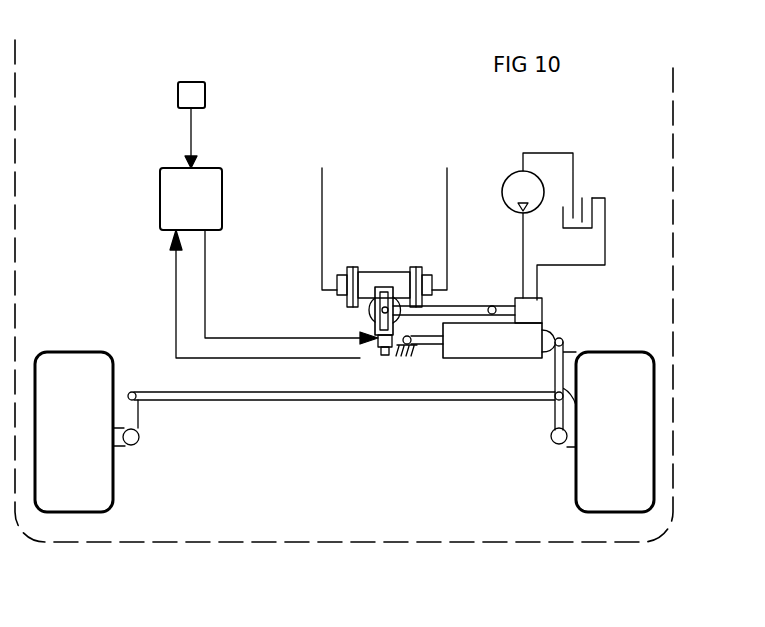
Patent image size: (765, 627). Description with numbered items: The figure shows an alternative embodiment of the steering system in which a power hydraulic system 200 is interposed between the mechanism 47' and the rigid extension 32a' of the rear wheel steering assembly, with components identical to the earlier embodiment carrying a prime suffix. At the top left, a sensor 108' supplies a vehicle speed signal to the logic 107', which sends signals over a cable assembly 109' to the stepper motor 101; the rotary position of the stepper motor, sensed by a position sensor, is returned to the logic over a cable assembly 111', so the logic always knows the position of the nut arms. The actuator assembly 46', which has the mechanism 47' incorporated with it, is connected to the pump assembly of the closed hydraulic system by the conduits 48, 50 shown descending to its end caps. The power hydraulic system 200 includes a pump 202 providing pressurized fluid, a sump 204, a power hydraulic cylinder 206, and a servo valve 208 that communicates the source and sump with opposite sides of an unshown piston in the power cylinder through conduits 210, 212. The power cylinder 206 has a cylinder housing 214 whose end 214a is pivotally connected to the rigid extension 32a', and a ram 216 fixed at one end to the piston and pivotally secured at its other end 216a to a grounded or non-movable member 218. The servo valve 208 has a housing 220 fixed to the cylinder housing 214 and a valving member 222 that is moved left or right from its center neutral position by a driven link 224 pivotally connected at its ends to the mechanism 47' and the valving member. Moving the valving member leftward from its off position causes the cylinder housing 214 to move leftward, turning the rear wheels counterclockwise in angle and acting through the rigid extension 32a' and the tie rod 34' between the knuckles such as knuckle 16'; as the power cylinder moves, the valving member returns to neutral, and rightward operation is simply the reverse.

The sensor 108' is at (163, 120).
The logic 107' is at (149, 199).
The cable assembly 111' is at (237, 294).
The cable assembly 109' is at (291, 287).
The conduit 48 is at (322, 190).
The conduit 50 is at (447, 182).
The actuator assembly 46' is at (384, 257).
The mechanism 47' is at (335, 311).
The stepper motor 101 is at (378, 345).
The grounded member 218 is at (392, 352).
The driven link 224 is at (465, 306).
The valving member 222 is at (503, 303).
The servo valve 208 is at (556, 292).
The cylinder housing 214 is at (507, 342).
The power hydraulic cylinder 206 is at (470, 375).
The ram 216 is at (430, 345).
The ram end 216a is at (418, 348).
The pump 202 is at (505, 182).
The power hydraulic system 200 is at (588, 150).
The sump 204 is at (578, 228).
The conduit 212 is at (605, 253).
The conduit 210 is at (523, 228).
The servo housing 220 is at (530, 305).
The cylinder housing end 214a is at (559, 338).
The rigid extension 32a' is at (594, 386).
The tie rod 34' is at (344, 413).
The steering knuckle 16' is at (144, 383).